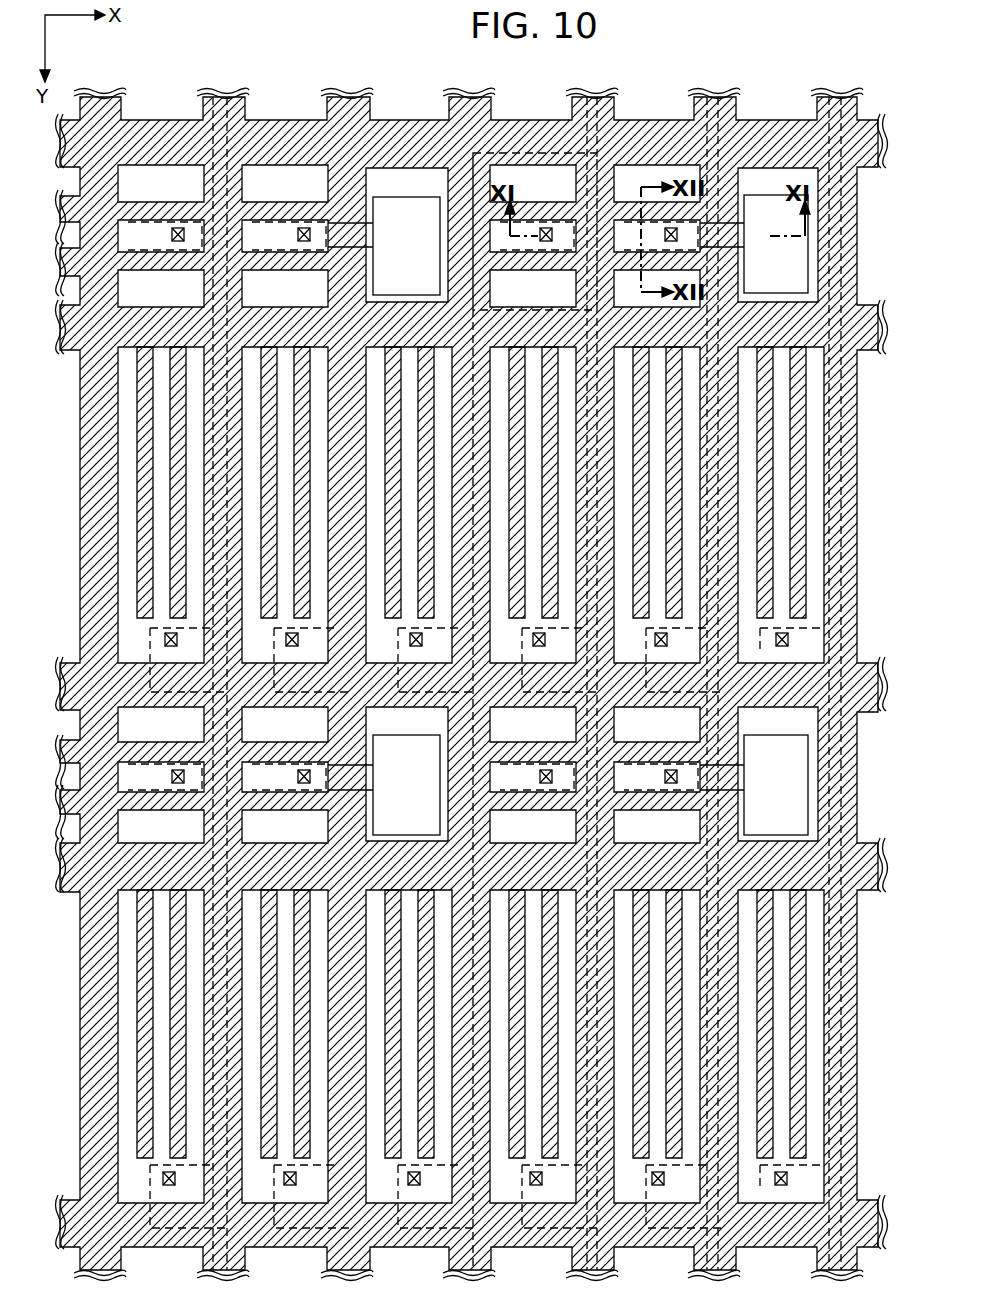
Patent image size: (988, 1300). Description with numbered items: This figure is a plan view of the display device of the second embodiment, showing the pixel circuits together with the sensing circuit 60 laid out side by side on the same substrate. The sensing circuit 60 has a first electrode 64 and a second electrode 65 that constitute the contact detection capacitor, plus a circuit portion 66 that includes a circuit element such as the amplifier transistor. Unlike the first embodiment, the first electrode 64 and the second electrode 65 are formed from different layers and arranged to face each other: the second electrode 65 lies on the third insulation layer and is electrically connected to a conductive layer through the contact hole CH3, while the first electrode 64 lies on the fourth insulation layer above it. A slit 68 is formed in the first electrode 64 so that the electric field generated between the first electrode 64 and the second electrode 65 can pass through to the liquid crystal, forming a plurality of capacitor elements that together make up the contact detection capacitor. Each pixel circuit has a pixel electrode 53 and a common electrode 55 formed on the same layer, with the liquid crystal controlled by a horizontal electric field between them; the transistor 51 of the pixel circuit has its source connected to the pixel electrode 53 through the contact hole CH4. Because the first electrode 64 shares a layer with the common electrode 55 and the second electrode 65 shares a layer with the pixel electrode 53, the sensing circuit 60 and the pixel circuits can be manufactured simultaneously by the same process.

The transistor 51 is at (857, 622).
The pixel electrode 53 is at (115, 510).
The common electrode 55 is at (100, 592).
The sensing circuit 60 is at (755, 150).
The first electrode 64 is at (279, 140).
The second electrode 65 is at (161, 163).
The circuit portion 66 is at (795, 256).
The slit 68 is at (490, 290).
The contact hole CH3 is at (546, 228).
The contact hole CH4 is at (782, 640).